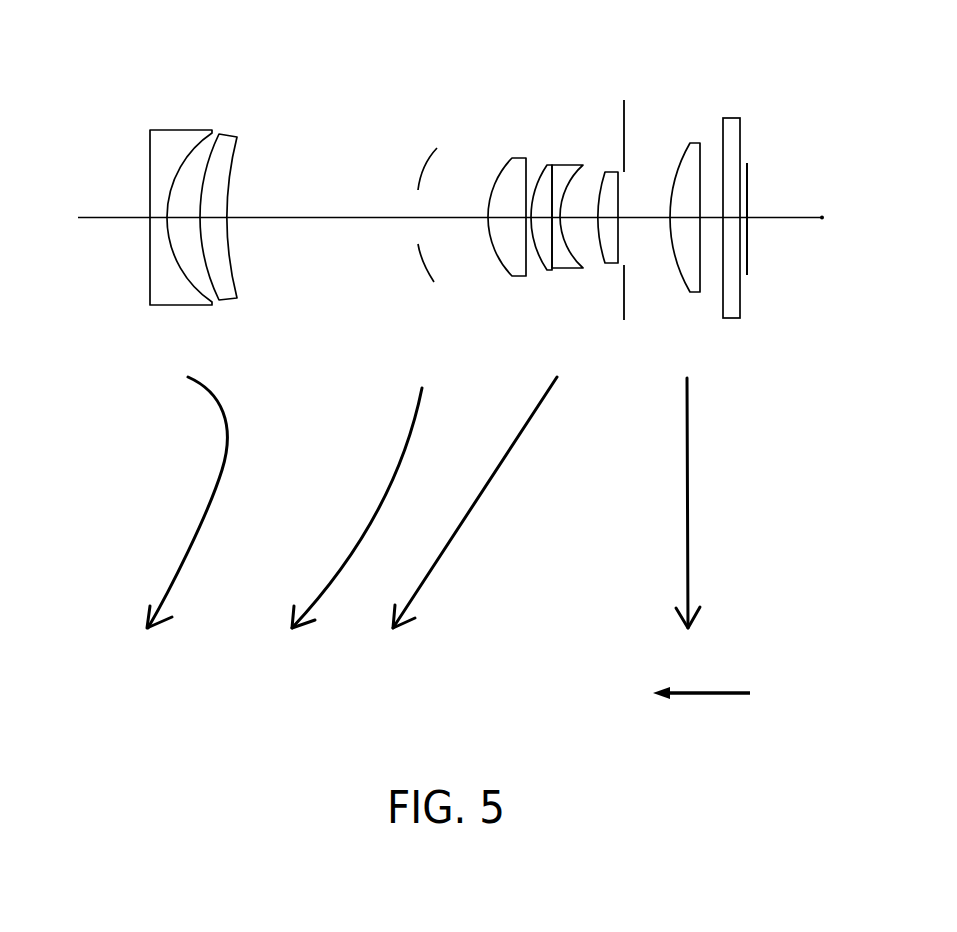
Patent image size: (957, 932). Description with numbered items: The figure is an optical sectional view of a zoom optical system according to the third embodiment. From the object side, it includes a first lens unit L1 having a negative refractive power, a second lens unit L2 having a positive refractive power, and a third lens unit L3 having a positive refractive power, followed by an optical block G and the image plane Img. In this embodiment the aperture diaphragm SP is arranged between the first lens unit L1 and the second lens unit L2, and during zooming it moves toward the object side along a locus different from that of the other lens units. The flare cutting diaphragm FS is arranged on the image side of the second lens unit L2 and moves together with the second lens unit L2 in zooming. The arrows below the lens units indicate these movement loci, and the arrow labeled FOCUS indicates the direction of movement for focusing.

The first lens unit L1 is at (151, 58).
The second lens unit L2 is at (493, 59).
The third lens unit L3 is at (701, 58).
The optical block G is at (722, 58).
The aperture diaphragm SP is at (432, 255).
The flare cutting diaphragm FS is at (621, 232).
The image plane Img is at (789, 219).
The focusing direction arrow FOCUS is at (701, 714).